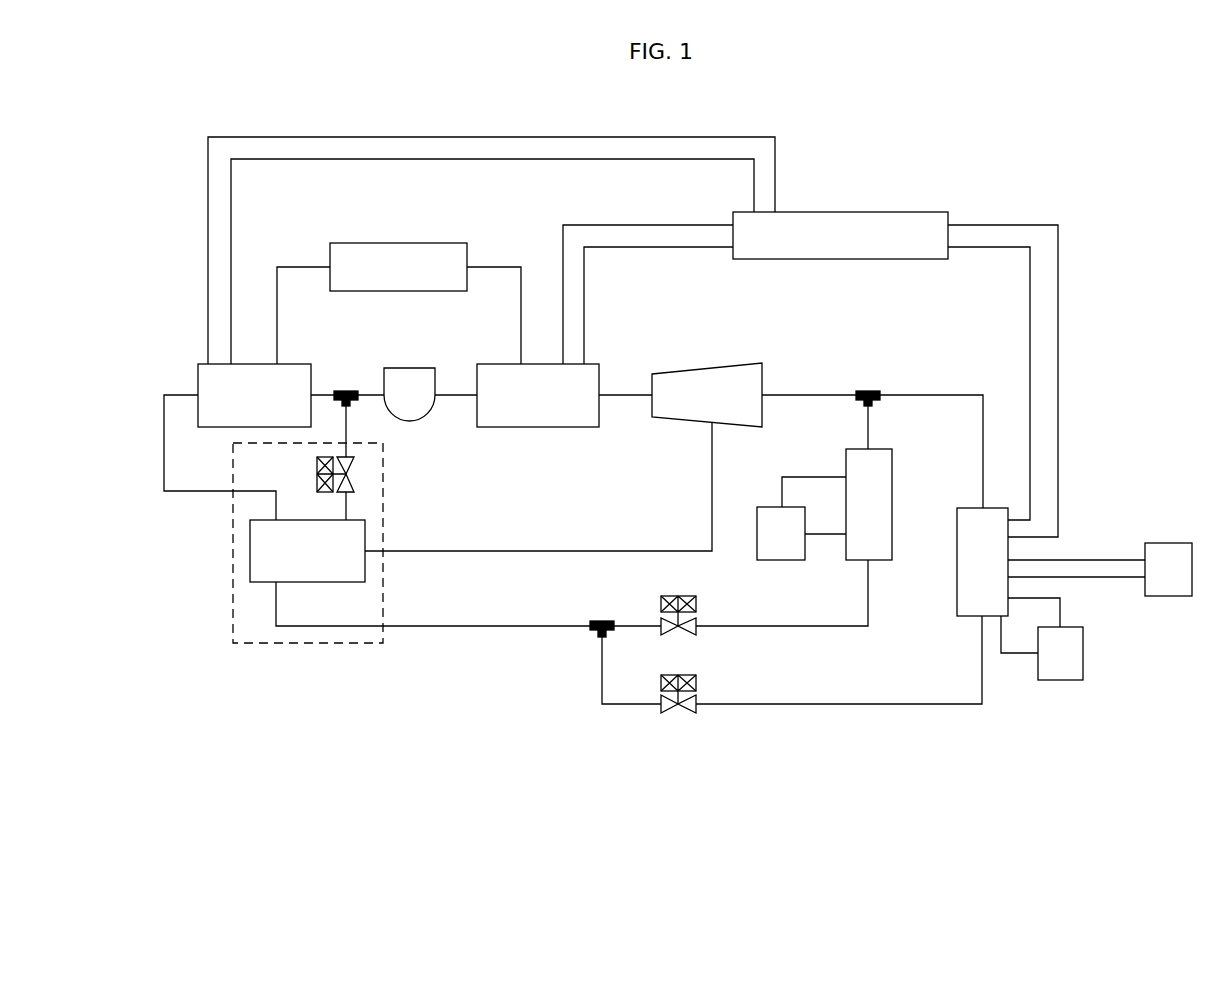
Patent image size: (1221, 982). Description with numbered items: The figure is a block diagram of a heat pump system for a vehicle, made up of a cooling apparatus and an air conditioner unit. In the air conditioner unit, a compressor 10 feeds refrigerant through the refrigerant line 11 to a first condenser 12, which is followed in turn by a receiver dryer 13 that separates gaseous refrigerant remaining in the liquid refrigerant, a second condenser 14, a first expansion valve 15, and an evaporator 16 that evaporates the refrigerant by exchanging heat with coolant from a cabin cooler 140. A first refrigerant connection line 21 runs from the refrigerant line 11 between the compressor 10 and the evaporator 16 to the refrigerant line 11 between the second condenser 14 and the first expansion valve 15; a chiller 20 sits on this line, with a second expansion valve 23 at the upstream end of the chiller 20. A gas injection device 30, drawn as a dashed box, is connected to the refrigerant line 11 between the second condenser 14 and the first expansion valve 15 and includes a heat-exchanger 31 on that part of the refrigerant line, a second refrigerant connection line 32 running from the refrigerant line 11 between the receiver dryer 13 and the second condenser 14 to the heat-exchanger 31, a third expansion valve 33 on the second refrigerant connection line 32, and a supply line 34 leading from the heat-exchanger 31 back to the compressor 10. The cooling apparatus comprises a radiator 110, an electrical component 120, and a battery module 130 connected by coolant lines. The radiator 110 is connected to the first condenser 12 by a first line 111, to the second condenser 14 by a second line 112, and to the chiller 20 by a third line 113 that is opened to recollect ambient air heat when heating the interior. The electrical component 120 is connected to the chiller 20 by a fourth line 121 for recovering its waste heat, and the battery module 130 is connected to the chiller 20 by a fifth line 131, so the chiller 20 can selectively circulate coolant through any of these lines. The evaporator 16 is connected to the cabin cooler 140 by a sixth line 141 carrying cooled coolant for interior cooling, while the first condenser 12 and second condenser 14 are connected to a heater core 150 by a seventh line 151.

The compressor 10 is at (708, 367).
The refrigerant line 11 is at (808, 395).
The first condenser 12 is at (542, 427).
The receiver dryer 13 is at (409, 368).
The second condenser 14 is at (198, 375).
The first expansion valve 15 is at (661, 604).
The evaporator 16 is at (892, 472).
The chiller 20 is at (957, 578).
The first refrigerant connection line 21 is at (933, 395).
The second expansion valve 23 is at (691, 713).
The gas injection device 30 is at (233, 600).
The heat-exchanger 31 is at (250, 551).
The second refrigerant connection line 32 is at (350, 425).
The third expansion valve 33 is at (355, 482).
The supply line 34 is at (588, 551).
The radiator 110 is at (849, 212).
The first line 111 is at (651, 247).
The second line 112 is at (538, 159).
The third line 113 is at (1030, 345).
The electrical component 120 is at (1167, 543).
The fourth line 121 is at (1107, 577).
The battery module 130 is at (1083, 654).
The fifth line 131 is at (1018, 600).
The cabin cooler 140 is at (782, 561).
The sixth line 141 is at (820, 534).
The heater core 150 is at (398, 243).
The seventh line 151 is at (288, 267).